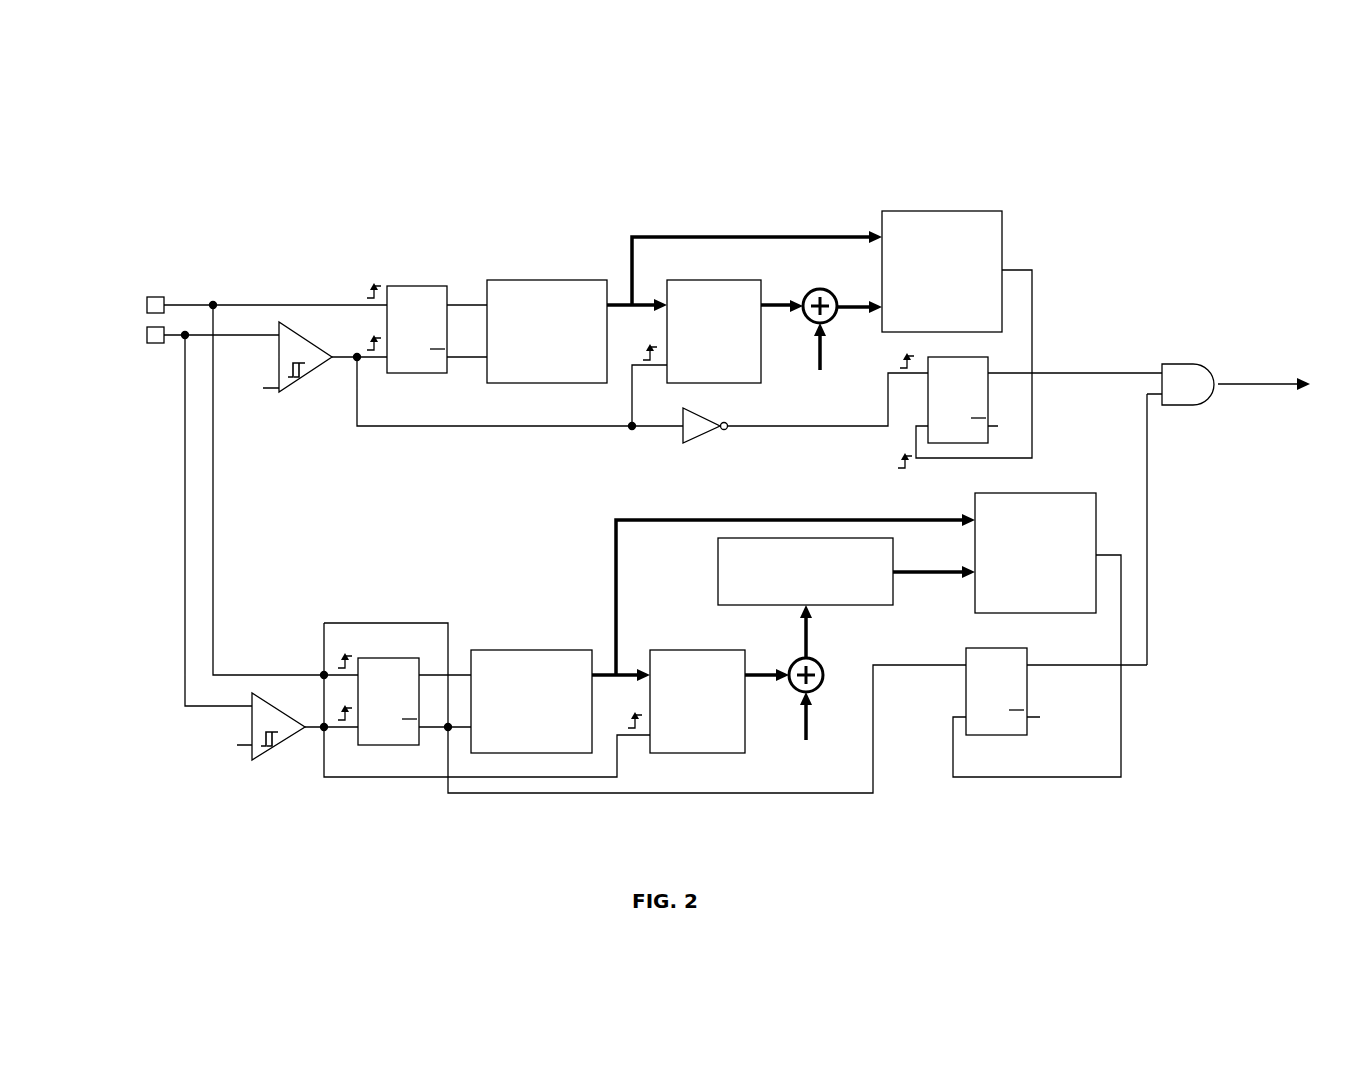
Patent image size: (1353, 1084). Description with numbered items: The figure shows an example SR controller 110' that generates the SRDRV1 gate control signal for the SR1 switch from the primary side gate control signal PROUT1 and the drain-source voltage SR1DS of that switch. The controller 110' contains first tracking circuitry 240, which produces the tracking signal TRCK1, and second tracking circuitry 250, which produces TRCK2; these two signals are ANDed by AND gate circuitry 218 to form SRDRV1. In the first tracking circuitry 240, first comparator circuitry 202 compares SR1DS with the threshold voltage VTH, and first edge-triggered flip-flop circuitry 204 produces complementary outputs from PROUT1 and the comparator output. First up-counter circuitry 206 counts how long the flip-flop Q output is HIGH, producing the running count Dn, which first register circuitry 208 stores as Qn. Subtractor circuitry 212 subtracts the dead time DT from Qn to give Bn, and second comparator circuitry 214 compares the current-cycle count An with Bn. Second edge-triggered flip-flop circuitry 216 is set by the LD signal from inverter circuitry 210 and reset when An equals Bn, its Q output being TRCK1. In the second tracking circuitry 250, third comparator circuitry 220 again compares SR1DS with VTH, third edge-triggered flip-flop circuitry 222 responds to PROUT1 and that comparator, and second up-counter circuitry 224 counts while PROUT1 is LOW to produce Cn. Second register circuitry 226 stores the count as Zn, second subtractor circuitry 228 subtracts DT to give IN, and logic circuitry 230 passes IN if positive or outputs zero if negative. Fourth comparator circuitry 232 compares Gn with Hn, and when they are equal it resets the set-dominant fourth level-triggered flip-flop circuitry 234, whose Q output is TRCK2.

The SR controller 110' is at (696, 486).
The first comparator circuitry 202 is at (310, 372).
The first edge-triggered flip-flop circuitry 204 is at (420, 373).
The first up-counter circuitry 206 is at (550, 376).
The first register circuitry 208 is at (670, 374).
The inverter circuitry 210 is at (695, 421).
The subtractor circuitry 212 is at (813, 331).
The second comparator circuitry 214 is at (1002, 246).
The second edge-triggered flip-flop circuitry 216 is at (928, 398).
The AND gate circuitry 218 is at (1180, 364).
The third comparator circuitry 220 is at (283, 741).
The third edge-triggered flip-flop circuitry 222 is at (383, 746).
The second up-counter circuitry 224 is at (510, 754).
The second register circuitry 226 is at (700, 754).
The second subtractor circuitry 228 is at (797, 692).
The logic circuitry 230 is at (718, 592).
The fourth comparator circuitry 232 is at (1068, 493).
The fourth level-triggered flip-flop circuitry 234 is at (966, 690).
The first tracking circuitry 240 is at (1095, 281).
The second tracking circuitry 250 is at (1170, 605).